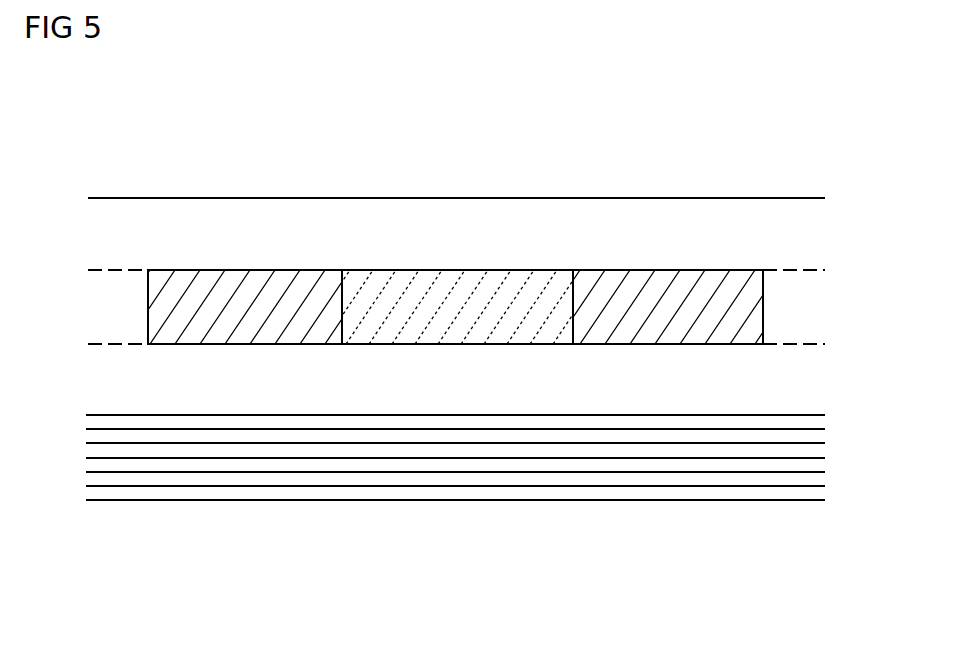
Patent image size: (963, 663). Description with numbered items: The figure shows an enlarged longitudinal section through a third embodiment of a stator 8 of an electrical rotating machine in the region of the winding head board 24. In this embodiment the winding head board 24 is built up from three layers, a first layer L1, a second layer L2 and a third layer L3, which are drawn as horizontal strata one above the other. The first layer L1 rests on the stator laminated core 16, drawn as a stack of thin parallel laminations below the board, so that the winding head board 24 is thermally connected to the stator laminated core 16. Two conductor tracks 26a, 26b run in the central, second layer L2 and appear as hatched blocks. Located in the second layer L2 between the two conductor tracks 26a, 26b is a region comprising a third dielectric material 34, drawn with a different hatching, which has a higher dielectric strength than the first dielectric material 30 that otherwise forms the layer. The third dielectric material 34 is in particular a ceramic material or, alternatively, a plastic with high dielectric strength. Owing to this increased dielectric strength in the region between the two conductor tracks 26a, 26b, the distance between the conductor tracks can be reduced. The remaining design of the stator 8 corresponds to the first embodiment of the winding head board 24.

The stator 8 is at (828, 163).
The stator laminated core 16 is at (792, 490).
The winding head board 24 is at (787, 230).
The conductor track 26a is at (280, 270).
The conductor track 26b is at (673, 270).
The first dielectric material 30 is at (99, 241).
The third dielectric material 34 is at (458, 270).
The first layer L1 is at (815, 381).
The second layer L2 is at (815, 310).
The third layer L3 is at (815, 240).